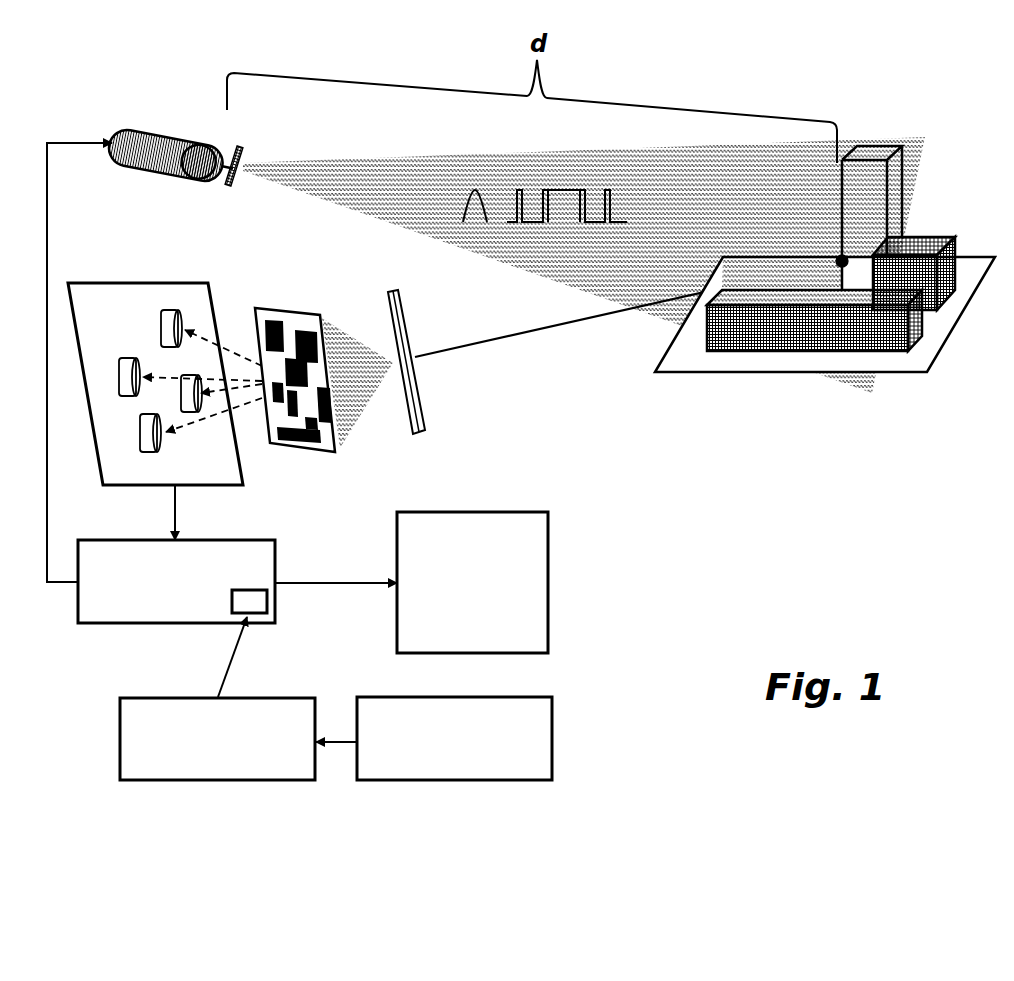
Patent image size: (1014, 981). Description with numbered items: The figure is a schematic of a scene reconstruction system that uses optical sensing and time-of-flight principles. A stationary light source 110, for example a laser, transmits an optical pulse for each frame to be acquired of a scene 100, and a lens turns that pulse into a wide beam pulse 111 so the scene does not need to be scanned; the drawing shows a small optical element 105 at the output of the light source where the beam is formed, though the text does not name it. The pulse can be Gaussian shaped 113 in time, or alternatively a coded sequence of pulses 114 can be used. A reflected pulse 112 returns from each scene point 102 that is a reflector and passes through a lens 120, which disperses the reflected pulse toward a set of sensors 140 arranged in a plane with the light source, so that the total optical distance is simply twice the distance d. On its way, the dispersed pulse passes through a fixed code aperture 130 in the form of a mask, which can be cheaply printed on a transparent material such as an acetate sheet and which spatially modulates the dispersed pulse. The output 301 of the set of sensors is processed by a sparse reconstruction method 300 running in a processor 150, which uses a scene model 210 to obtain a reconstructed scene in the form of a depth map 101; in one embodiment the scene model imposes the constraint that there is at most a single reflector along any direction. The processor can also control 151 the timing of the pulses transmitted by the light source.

The scene 100 is at (863, 142).
The depth map 101 is at (475, 512).
The scene point 102 is at (842, 258).
The mirror 105 is at (228, 173).
The light source 110 is at (173, 137).
The wide beam pulse 111 is at (323, 165).
The reflected pulse 112 is at (523, 330).
The Gaussian shaped pulse 113 is at (472, 195).
The coded sequence of pulses 114 is at (567, 191).
The lens 120 is at (387, 290).
The fixed code aperture 130 is at (300, 312).
The set of sensors 140 is at (168, 283).
The processor 150 is at (130, 625).
The control 151 is at (47, 237).
The scene model 210 is at (537, 700).
The sparse reconstruction method 300 is at (258, 697).
The output of the set of sensors 301 is at (177, 507).